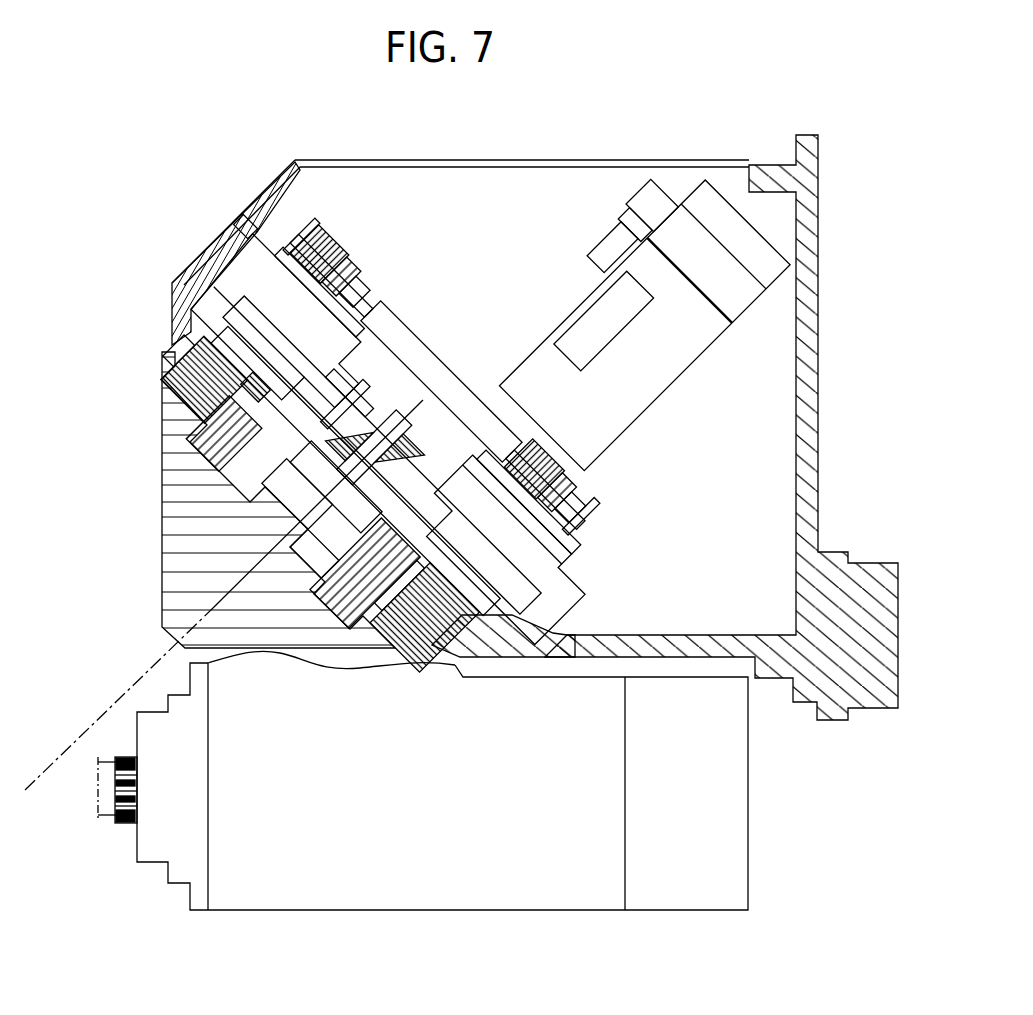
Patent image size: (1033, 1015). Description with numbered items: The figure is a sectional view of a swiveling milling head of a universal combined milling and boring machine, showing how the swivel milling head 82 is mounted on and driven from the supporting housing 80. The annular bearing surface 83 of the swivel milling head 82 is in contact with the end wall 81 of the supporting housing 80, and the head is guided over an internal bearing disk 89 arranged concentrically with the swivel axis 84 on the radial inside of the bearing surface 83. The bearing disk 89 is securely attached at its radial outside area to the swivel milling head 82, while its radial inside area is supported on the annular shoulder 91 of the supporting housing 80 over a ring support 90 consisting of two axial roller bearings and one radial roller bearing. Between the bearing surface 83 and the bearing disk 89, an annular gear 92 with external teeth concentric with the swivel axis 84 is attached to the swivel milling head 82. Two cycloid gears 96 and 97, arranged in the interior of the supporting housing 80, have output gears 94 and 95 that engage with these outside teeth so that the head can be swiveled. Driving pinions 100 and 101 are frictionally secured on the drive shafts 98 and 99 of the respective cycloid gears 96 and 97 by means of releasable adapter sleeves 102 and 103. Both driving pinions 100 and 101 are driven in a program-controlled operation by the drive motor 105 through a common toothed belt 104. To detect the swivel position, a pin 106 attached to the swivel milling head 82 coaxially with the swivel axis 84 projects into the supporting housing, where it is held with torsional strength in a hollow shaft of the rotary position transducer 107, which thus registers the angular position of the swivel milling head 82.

The supporting housing 80 is at (805, 388).
The end wall 81 is at (458, 658).
The swivel milling head 82 is at (190, 568).
The annular bearing surface 83 is at (172, 347).
The swivel axis 84 is at (80, 738).
The internal bearing disk 89 is at (245, 450).
The ring support 90 is at (355, 610).
The annular shoulder 91 is at (302, 493).
The annular gear 92 is at (215, 420).
The output gear 94 is at (428, 636).
The output gear 95 is at (185, 382).
The cycloid gear 96 is at (560, 598).
The cycloid gear 97 is at (222, 270).
The drive shaft 98 is at (578, 497).
The drive shaft 99 is at (318, 242).
The driving pinion 100 is at (573, 530).
The driving pinion 101 is at (357, 288).
The adapter sleeve 102 is at (577, 513).
The adapter sleeve 103 is at (344, 264).
The toothed belt 104 is at (450, 388).
The drive motor 105 is at (676, 347).
The pin 106 is at (300, 518).
The rotary position transducer 107 is at (390, 358).